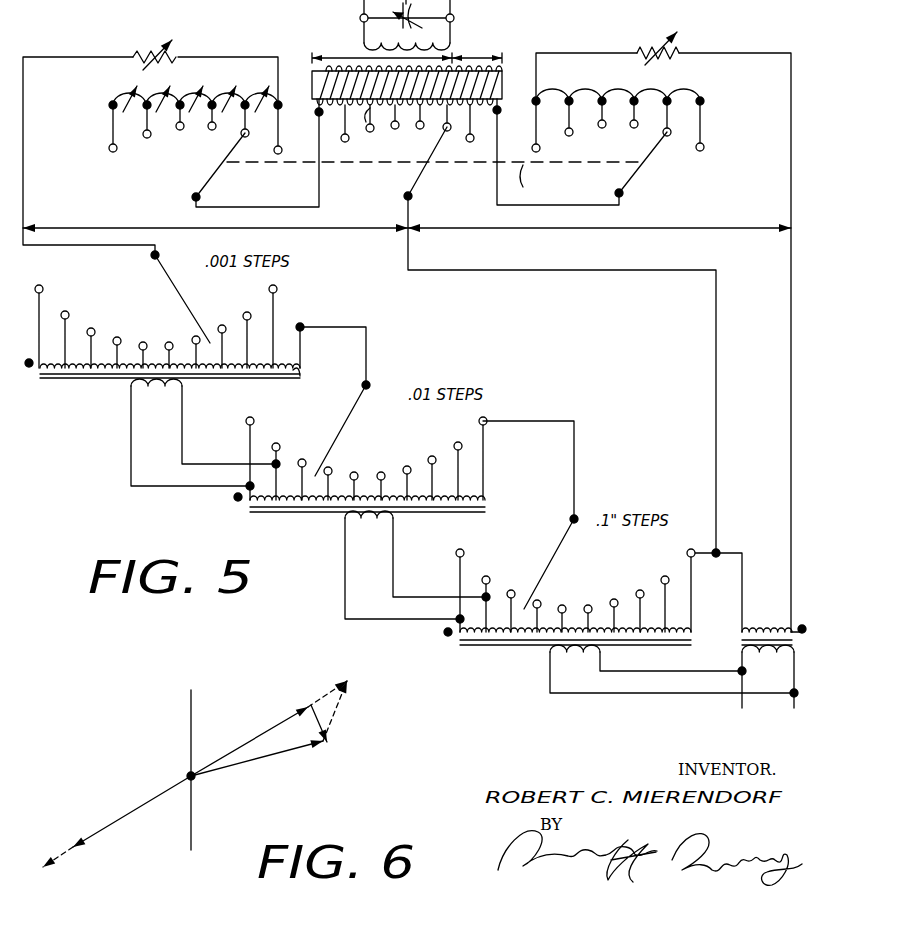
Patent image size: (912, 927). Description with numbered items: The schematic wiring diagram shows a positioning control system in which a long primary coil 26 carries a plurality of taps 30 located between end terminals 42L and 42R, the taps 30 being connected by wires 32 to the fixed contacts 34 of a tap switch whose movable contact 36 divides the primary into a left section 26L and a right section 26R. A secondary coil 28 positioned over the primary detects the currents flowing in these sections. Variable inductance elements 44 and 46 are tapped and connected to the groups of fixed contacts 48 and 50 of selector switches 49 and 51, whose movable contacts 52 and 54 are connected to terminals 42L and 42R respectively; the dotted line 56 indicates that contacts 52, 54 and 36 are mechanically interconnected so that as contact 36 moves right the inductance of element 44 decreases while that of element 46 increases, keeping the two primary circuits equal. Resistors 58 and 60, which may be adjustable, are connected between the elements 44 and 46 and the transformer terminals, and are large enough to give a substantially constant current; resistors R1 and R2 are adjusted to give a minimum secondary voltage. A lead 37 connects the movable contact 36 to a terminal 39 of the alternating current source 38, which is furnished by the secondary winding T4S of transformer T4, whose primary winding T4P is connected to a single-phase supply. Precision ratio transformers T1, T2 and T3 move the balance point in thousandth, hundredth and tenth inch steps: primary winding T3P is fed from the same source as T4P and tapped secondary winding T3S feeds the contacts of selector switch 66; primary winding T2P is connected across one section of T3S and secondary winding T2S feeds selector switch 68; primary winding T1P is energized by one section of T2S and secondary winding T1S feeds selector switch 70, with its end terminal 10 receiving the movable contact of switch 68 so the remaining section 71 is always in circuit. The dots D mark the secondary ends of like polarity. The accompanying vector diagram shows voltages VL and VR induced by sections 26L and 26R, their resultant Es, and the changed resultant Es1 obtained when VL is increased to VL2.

In FIG. 5, the resistor 58 is at (140, 55).
In FIG. 5, the resistor R1 is at (157, 44).
In FIG. 5, the variable inductance element 44 is at (189, 92).
In FIG. 5, the fixed contacts 48 is at (109, 148).
In FIG. 5, the end terminal 42L is at (259, 153).
In FIG. 5, the selector switch 49 is at (209, 176).
In FIG. 5, the movable contact 52 is at (208, 193).
In FIG. 5, the secondary coil 28 is at (402, 47).
In FIG. 5, the primary coil 26 is at (502, 80).
In FIG. 5, the primary section 26L is at (382, 52).
In FIG. 5, the primary section 26R is at (477, 52).
In FIG. 5, the taps 30 is at (366, 120).
In FIG. 5, the wires 32 is at (374, 119).
In FIG. 5, the fixed contacts 34 is at (376, 124).
In FIG. 5, the movable contact 36 is at (418, 183).
In FIG. 5, the end terminal 42R is at (556, 152).
In FIG. 5, the dotted line 56 is at (526, 182).
In FIG. 5, the resistor 60 is at (636, 53).
In FIG. 5, the resistor R2 is at (667, 36).
In FIG. 5, the variable inductance element 46 is at (618, 94).
In FIG. 5, the fixed contacts 50 is at (704, 145).
In FIG. 5, the movable contact 54 is at (642, 165).
In FIG. 5, the selector switch 51 is at (629, 196).
In FIG. 5, the selector switch 70 is at (167, 277).
In FIG. 5, the end terminal 10 is at (305, 324).
In FIG. 5, the remaining section 71 is at (299, 376).
In FIG. 5, the selector switch 68 is at (352, 414).
In FIG. 5, the selector switch 66 is at (550, 554).
In FIG. 5, the lead 37 is at (715, 342).
In FIG. 5, the terminal 39 is at (720, 552).
In FIG. 5, the alternating current source 38 is at (751, 630).
In FIG. 5, the dots D is at (29, 363).
In FIG. 5, the transformer T1 is at (167, 337).
In FIG. 5, the secondary winding T1S is at (40, 379).
In FIG. 5, the primary winding T1P is at (162, 394).
In FIG. 5, the transformer T2 is at (370, 470).
In FIG. 5, the secondary winding T2S is at (252, 513).
In FIG. 5, the primary winding T2P is at (373, 528).
In FIG. 5, the transformer T3 is at (579, 603).
In FIG. 5, the secondary winding T3S is at (459, 648).
In FIG. 5, the primary winding T3P is at (578, 657).
In FIG. 5, the transformer T4 is at (712, 718).
In FIG. 5, the secondary winding T4S is at (741, 647).
In FIG. 5, the primary winding T4P is at (770, 659).
In FIG. 6, the voltage vector VL is at (132, 811).
In FIG. 6, the voltage vector VL2 is at (49, 850).
In FIG. 6, the voltage vector VR is at (257, 761).
In FIG. 6, the secondary voltage vector Es is at (269, 728).
In FIG. 6, the resultant voltage vector Es1 is at (341, 711).